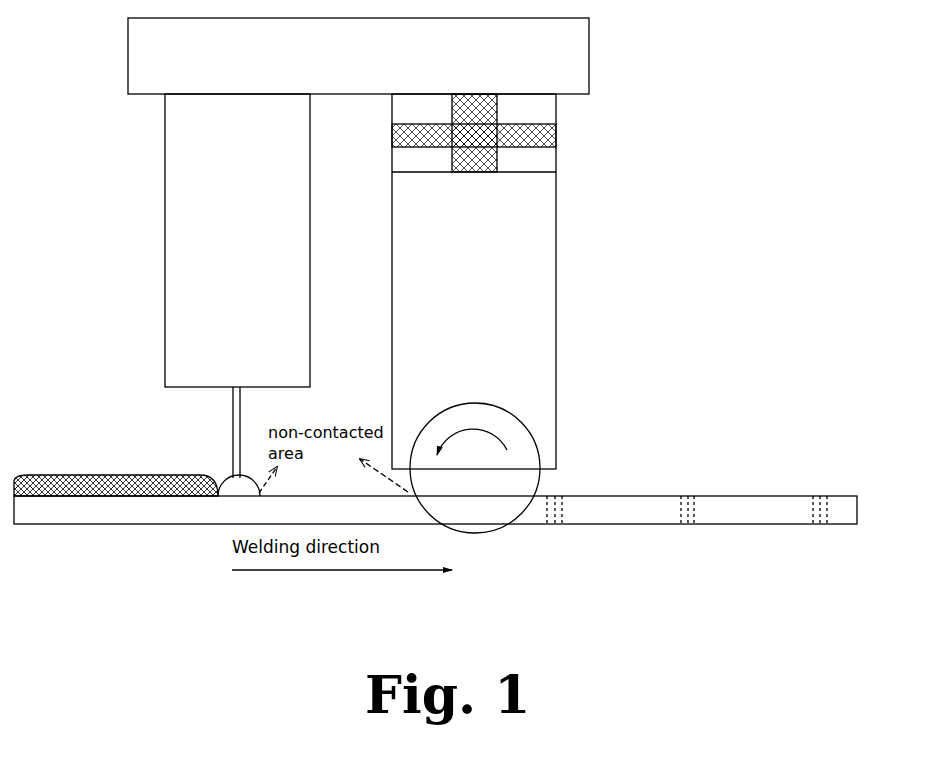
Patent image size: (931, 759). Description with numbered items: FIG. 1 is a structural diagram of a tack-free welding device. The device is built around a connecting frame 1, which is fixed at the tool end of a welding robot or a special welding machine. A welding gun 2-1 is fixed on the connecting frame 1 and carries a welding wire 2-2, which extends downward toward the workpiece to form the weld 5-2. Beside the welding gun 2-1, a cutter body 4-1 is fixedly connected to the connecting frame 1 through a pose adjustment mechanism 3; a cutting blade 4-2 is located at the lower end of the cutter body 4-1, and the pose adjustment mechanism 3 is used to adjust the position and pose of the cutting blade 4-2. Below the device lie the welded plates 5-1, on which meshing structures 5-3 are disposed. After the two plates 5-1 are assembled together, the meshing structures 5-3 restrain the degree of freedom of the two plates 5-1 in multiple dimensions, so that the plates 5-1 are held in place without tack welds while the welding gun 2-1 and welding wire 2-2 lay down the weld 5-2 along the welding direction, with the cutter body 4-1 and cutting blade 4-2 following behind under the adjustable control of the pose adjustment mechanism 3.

The connecting frame 1 is at (222, 42).
The welding gun 2-1 is at (237, 190).
The welding wire 2-2 is at (232, 433).
The pose adjustment mechanism 3 is at (528, 146).
The cutter body 4-1 is at (470, 338).
The cutting blade 4-2 is at (516, 426).
The plate 5-1 is at (586, 504).
The weld 5-2 is at (150, 484).
The meshing structure 5-3 is at (692, 504).